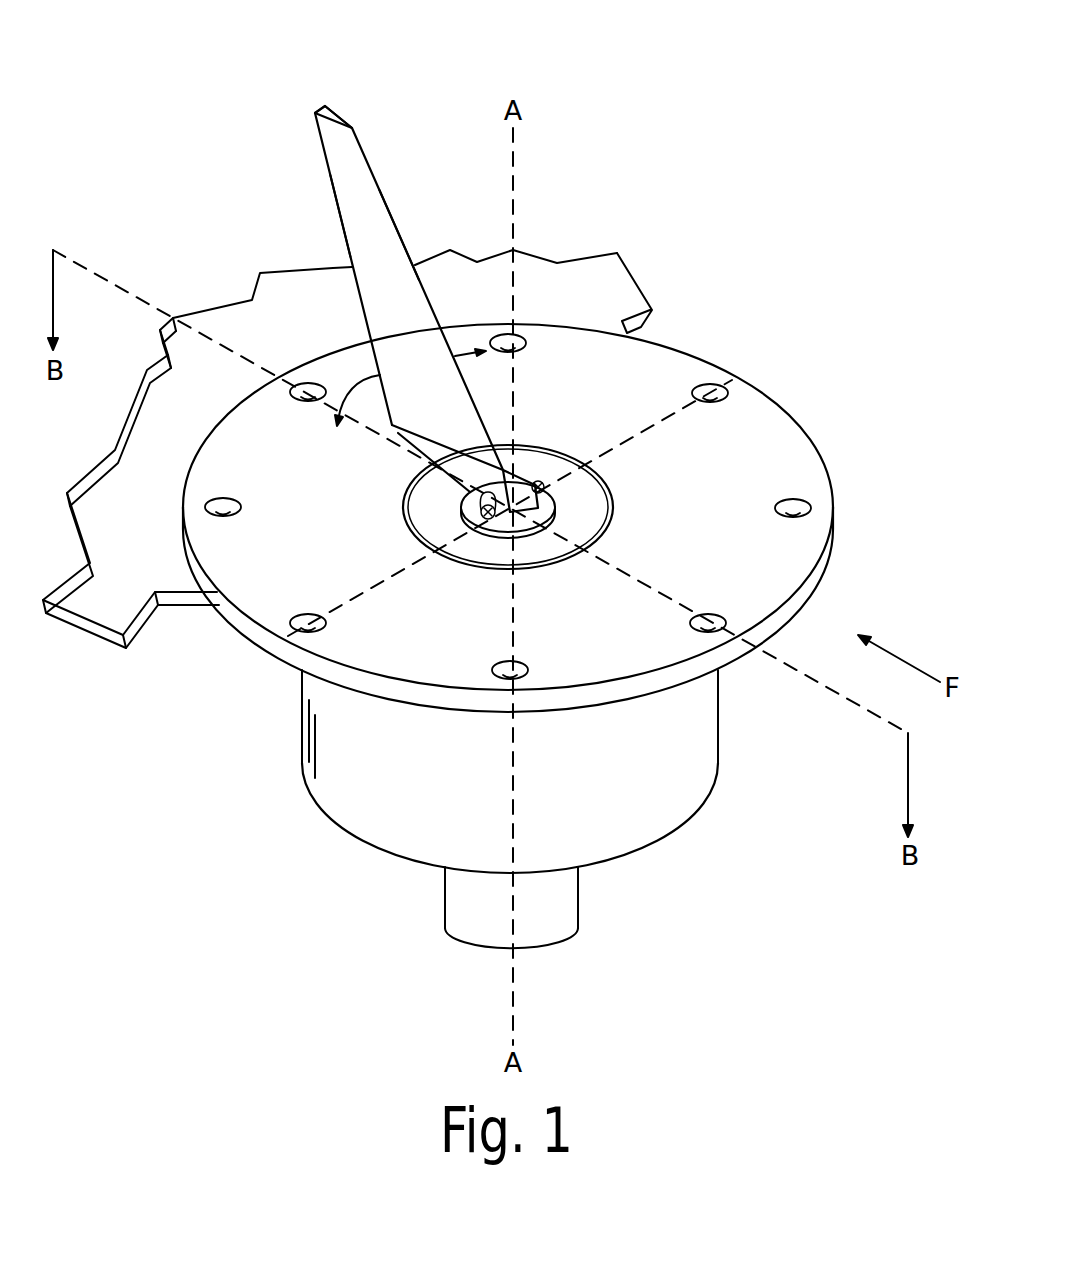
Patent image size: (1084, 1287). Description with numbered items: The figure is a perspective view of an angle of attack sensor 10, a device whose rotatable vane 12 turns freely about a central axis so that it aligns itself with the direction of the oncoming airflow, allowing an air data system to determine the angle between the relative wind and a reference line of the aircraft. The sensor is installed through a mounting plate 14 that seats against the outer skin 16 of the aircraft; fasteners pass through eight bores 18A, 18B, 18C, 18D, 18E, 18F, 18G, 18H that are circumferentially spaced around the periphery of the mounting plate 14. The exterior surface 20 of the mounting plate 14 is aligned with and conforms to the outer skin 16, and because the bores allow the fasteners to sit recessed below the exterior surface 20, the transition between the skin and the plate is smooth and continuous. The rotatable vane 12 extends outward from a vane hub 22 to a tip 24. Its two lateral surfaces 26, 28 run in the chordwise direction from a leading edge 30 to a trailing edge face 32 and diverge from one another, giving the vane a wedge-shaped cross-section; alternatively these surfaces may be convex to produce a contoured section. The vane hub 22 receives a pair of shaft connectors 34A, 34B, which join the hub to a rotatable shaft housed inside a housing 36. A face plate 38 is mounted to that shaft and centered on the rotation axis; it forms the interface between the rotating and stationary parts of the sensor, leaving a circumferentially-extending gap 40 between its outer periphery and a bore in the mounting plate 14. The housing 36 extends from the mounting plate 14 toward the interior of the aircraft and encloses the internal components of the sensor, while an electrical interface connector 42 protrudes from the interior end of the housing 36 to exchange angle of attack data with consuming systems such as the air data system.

The angle of attack sensor 10 is at (745, 144).
The rotatable vane 12 is at (419, 135).
The mounting plate 14 is at (817, 441).
The outer skin 16 is at (173, 392).
The bore 18A is at (812, 507).
The bore 18B is at (722, 617).
The bore 18C is at (530, 676).
The bore 18D is at (300, 613).
The bore 18E is at (228, 497).
The bore 18F is at (308, 384).
The bore 18G is at (527, 340).
The bore 18H is at (718, 387).
The exterior surface 20 is at (587, 635).
The vane hub 22 is at (596, 505).
The tip 24 is at (322, 98).
The lateral surface 26 is at (354, 184).
The lateral surface 28 is at (342, 118).
The leading edge 30 is at (394, 216).
The trailing edge face 32 is at (324, 114).
The shaft connector 34A is at (655, 500).
The shaft connector 34B is at (540, 482).
The housing 36 is at (720, 706).
The face plate 38 is at (519, 560).
The circumferentially-extending gap 40 is at (607, 536).
The electrical interface connector 42 is at (580, 894).